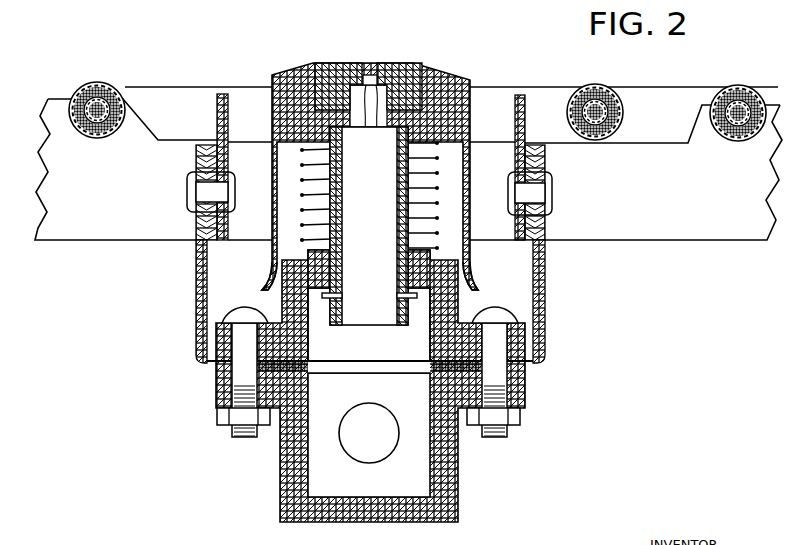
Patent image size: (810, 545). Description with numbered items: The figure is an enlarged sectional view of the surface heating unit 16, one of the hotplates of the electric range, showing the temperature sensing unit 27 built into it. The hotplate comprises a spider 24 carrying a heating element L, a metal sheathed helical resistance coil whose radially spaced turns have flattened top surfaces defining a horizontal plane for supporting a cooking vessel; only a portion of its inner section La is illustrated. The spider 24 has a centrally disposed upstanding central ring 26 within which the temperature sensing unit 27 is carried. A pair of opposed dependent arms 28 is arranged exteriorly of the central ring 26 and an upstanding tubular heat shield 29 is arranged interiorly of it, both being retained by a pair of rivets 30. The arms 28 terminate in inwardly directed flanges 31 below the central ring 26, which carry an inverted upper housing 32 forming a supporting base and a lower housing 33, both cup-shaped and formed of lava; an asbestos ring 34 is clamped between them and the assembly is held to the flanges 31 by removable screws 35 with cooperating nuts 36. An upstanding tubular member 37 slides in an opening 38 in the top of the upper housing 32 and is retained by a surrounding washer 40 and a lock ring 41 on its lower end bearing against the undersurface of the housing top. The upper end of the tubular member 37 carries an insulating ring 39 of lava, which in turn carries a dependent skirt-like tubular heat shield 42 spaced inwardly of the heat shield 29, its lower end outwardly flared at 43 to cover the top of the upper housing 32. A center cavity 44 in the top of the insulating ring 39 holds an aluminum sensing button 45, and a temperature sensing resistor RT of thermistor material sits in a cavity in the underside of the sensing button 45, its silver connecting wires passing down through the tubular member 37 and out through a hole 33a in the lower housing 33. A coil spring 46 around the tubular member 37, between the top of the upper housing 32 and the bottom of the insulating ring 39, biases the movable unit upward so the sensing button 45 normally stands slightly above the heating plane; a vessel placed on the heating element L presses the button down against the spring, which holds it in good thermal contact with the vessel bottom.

The surface heating unit 16 is at (672, 76).
The spider 24 is at (675, 207).
The heating element L is at (113, 84).
The inner section of heating element La is at (714, 135).
The central ring 26 is at (208, 148).
The temperature sensing unit 27 is at (357, 63).
The dependent arms 28 is at (195, 307).
The tubular heat shield 29 is at (228, 93).
The rivets 30 is at (196, 192).
The flanges 31 is at (205, 365).
The upper housing 32 is at (431, 345).
The lower housing 33 is at (297, 491).
The hole 33a is at (366, 462).
The asbestos ring 34 is at (377, 369).
The screws 35 is at (245, 313).
The nuts 36 is at (216, 412).
The tubular member 37 is at (343, 203).
The opening 38 is at (408, 270).
The insulating ring 39 is at (466, 76).
The washer 40 is at (315, 292).
The lock ring 41 is at (342, 297).
The dependent tubular heat shield 42 is at (271, 160).
The outwardly flared lower end 43 is at (268, 282).
The center cavity 44 is at (320, 63).
The sensing button 45 is at (415, 63).
The coil spring 46 is at (438, 174).
The temperature sensing resistor RT is at (378, 63).